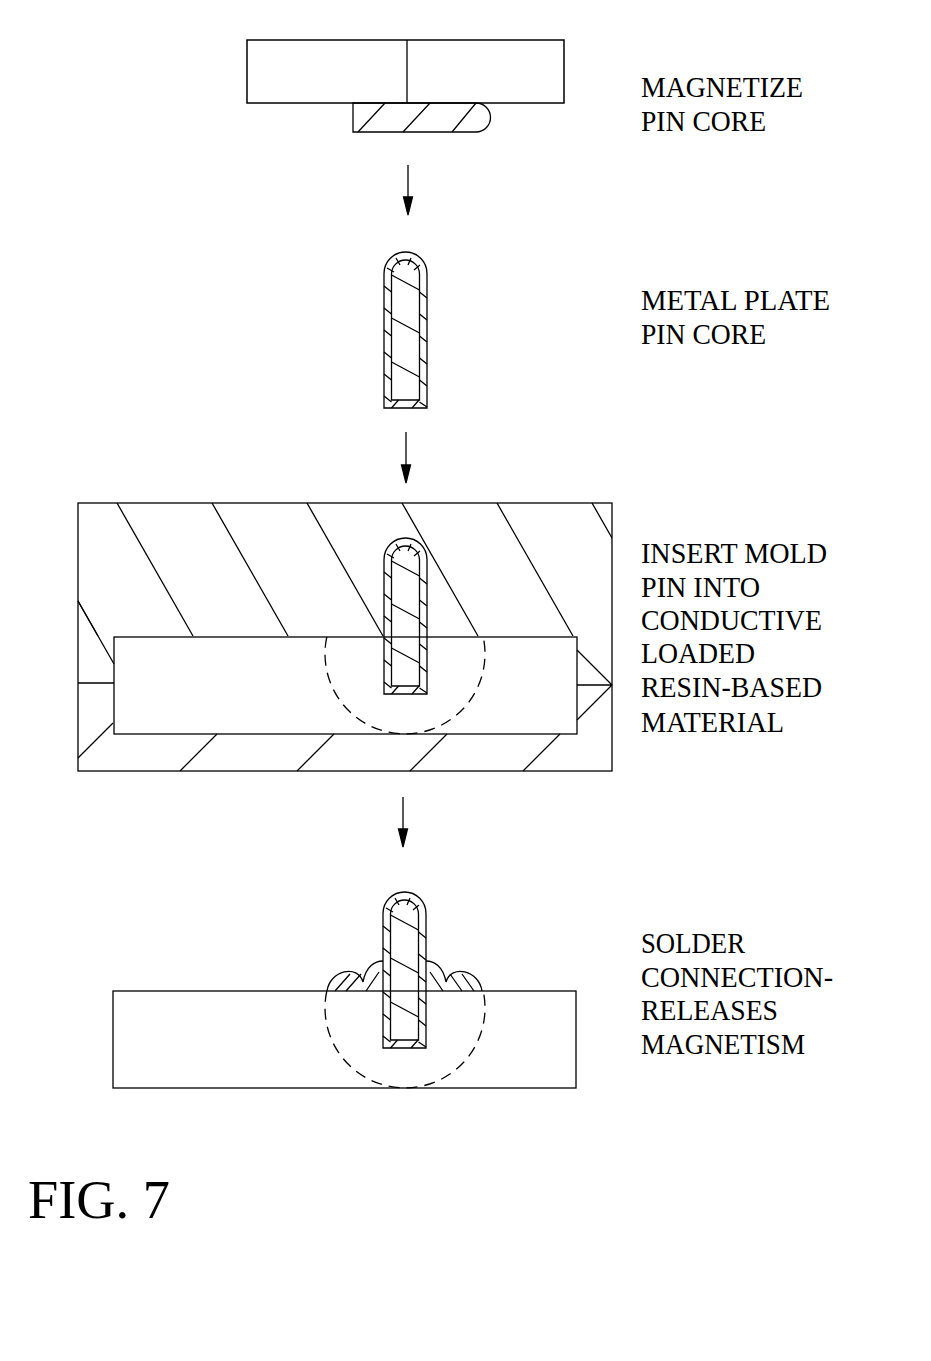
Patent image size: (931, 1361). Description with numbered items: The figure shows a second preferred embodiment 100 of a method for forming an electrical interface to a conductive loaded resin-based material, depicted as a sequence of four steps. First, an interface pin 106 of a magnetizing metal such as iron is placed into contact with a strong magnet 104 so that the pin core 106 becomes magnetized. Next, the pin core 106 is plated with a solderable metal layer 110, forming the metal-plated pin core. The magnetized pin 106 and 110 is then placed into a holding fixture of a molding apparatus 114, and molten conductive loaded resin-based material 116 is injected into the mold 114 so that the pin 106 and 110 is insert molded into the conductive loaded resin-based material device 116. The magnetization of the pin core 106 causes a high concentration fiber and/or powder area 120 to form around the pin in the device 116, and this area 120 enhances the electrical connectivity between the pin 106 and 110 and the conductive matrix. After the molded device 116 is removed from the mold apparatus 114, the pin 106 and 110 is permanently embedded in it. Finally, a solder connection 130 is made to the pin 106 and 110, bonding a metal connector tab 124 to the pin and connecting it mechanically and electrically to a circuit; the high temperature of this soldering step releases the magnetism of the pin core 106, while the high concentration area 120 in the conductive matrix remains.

The second preferred embodiment 100 is at (165, 38).
The strong magnet 104 is at (267, 91).
The interface pin 106 is at (445, 127).
The solderable metal layer 110 is at (387, 297).
The molding apparatus 114 is at (127, 503).
The conductive loaded resin-based material device 116 is at (542, 713).
The high concentration fiber and/or powder area 120 is at (363, 683).
The metal connector tab 124 is at (343, 978).
The solder connection 130 is at (425, 975).